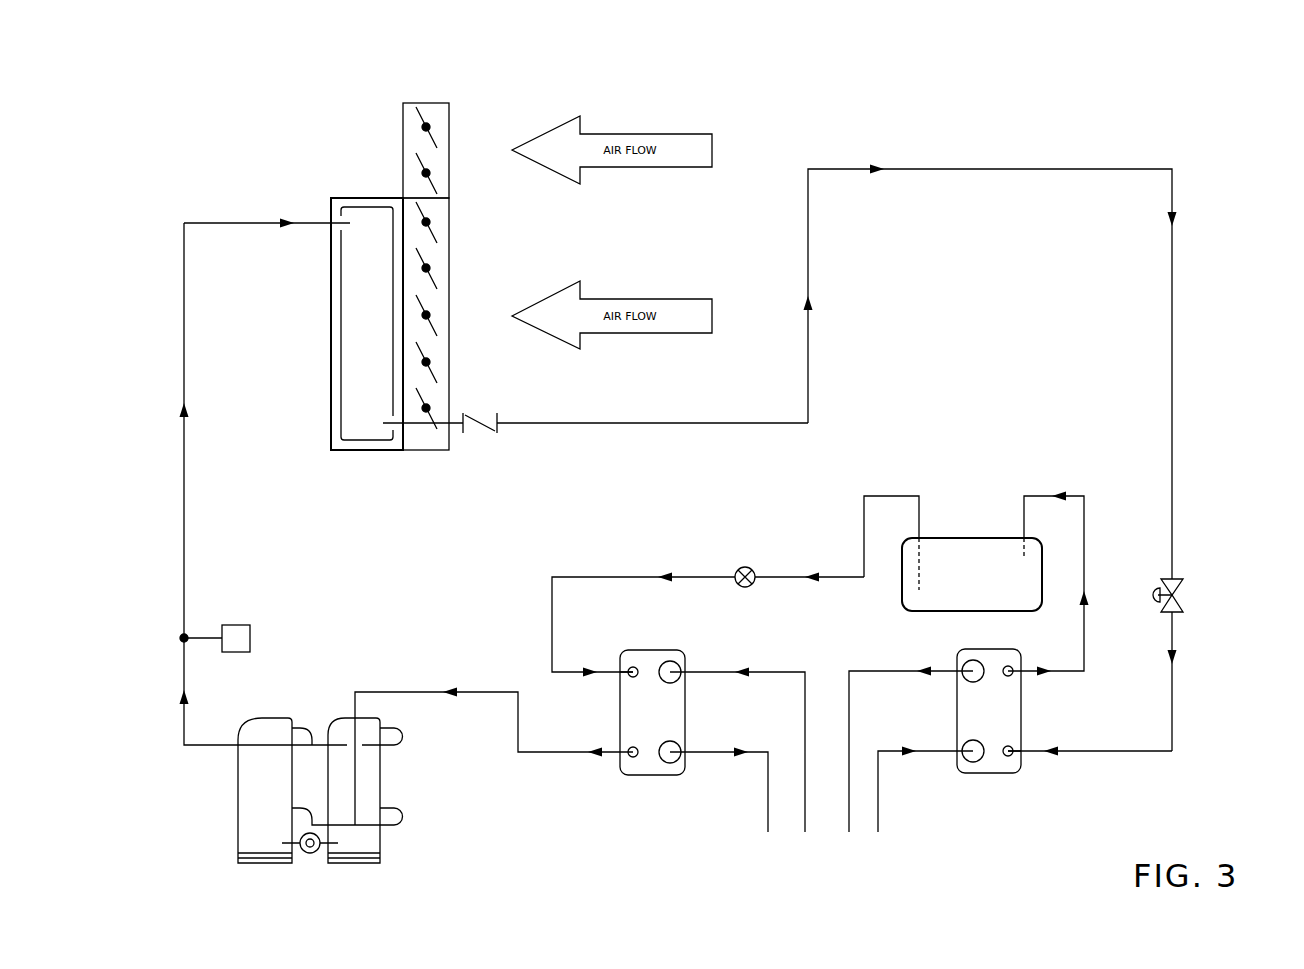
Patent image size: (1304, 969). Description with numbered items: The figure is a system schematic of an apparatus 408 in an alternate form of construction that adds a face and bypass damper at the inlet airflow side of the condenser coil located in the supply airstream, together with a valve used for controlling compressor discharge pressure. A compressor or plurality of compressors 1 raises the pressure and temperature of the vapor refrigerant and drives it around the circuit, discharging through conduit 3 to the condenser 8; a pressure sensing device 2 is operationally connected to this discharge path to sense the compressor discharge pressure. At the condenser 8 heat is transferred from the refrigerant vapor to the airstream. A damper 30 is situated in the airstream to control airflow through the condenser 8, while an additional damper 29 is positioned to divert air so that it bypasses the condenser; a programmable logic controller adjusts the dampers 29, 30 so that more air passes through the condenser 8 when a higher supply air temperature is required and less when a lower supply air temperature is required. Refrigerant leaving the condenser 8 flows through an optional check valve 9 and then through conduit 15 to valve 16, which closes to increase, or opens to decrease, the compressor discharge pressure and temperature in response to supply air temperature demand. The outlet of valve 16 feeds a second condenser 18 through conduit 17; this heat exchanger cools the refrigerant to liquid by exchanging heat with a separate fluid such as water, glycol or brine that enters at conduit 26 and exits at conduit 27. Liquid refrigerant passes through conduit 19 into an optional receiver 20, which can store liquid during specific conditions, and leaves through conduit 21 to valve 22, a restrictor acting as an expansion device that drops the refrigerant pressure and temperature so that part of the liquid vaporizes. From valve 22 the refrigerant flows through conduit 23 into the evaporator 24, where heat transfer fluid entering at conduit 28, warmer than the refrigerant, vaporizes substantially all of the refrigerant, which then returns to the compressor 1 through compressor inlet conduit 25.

The apparatus 408 is at (1185, 102).
The compressor 1 is at (260, 713).
The pressure sensing device 2 is at (240, 618).
The conduit 3 is at (187, 368).
The condenser coil 8 is at (352, 198).
The check valve 9 is at (477, 440).
The conduit 15 is at (1005, 163).
The valve 16 is at (1177, 570).
The conduit 17 is at (1174, 737).
The second condenser 18 is at (1023, 734).
The conduit 19 is at (1082, 489).
The receiver 20 is at (966, 536).
The conduit 21 is at (896, 489).
The valve 22 is at (755, 566).
The conduit 23 is at (598, 573).
The evaporator 24 is at (689, 732).
The compressor inlet conduit 25 is at (415, 699).
The conduit 26 is at (880, 798).
The conduit 27 is at (891, 662).
The conduit 28 is at (700, 669).
The damper 29 is at (398, 103).
The damper 30 is at (450, 258).